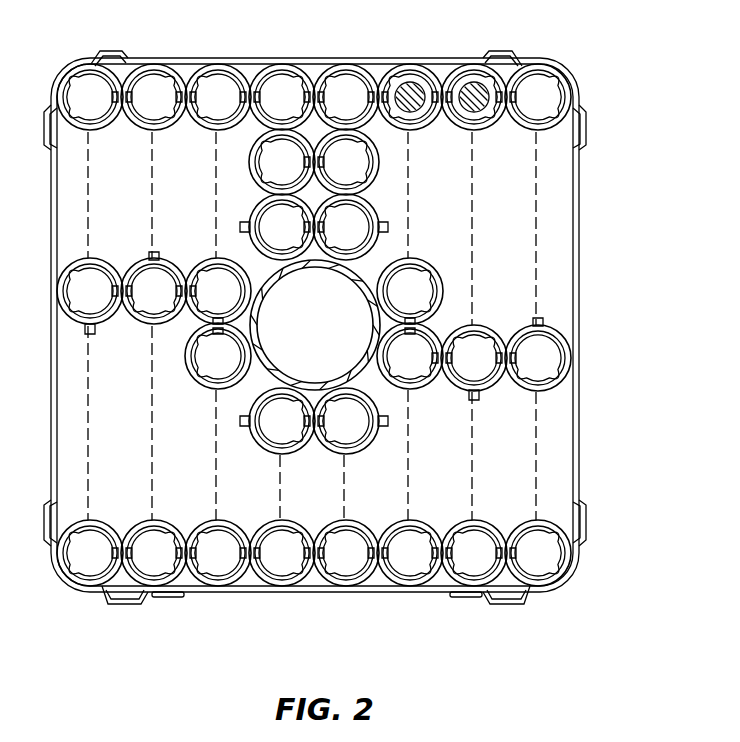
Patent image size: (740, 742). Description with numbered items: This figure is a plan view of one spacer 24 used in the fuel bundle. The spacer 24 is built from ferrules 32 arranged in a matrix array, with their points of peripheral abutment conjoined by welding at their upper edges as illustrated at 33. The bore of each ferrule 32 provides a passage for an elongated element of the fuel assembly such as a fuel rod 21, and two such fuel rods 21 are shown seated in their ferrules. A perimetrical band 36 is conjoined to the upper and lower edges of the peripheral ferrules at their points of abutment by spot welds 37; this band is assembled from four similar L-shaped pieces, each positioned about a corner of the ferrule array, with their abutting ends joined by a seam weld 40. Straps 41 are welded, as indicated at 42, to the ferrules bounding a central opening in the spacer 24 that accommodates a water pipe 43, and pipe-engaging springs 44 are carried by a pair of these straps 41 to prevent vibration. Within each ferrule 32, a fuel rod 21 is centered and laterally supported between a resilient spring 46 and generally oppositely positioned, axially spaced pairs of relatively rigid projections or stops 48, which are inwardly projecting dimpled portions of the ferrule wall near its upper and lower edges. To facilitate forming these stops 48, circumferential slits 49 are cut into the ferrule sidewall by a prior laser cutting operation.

The fuel rod 21 is at (467, 86).
The spacer 24 is at (600, 335).
The ferrule 32 is at (519, 124).
The weld at upper edge 33 is at (307, 70).
The perimetrical band 36 is at (578, 260).
The spot weld 37 is at (343, 63).
The seam weld 40 is at (347, 62).
The strap 41 is at (385, 262).
The weld 42 is at (250, 278).
The water pipe 43 is at (310, 262).
The pipe-engaging spring 44 is at (385, 390).
The resilient spring 46 is at (545, 100).
The stop 48 is at (158, 100).
The circumferential slit 49 is at (450, 523).